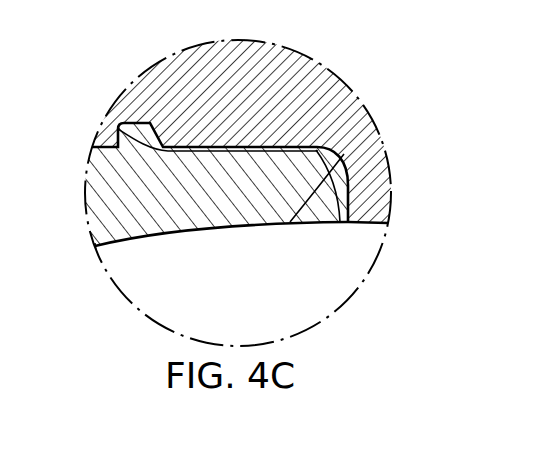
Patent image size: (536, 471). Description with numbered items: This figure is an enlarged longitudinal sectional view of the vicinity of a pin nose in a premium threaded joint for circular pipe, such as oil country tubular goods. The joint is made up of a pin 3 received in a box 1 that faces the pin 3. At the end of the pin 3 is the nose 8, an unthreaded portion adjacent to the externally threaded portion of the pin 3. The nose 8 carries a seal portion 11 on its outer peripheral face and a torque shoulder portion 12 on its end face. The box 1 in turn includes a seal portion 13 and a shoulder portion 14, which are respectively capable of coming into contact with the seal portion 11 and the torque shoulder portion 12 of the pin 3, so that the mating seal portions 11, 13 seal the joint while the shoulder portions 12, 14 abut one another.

The box 1 is at (178, 72).
The pin 3 is at (155, 222).
The nose 8 is at (218, 213).
The seal portion 11 is at (281, 223).
The torque shoulder portion 12 is at (333, 223).
The seal portion 13 is at (317, 148).
The shoulder portion 14 is at (378, 224).